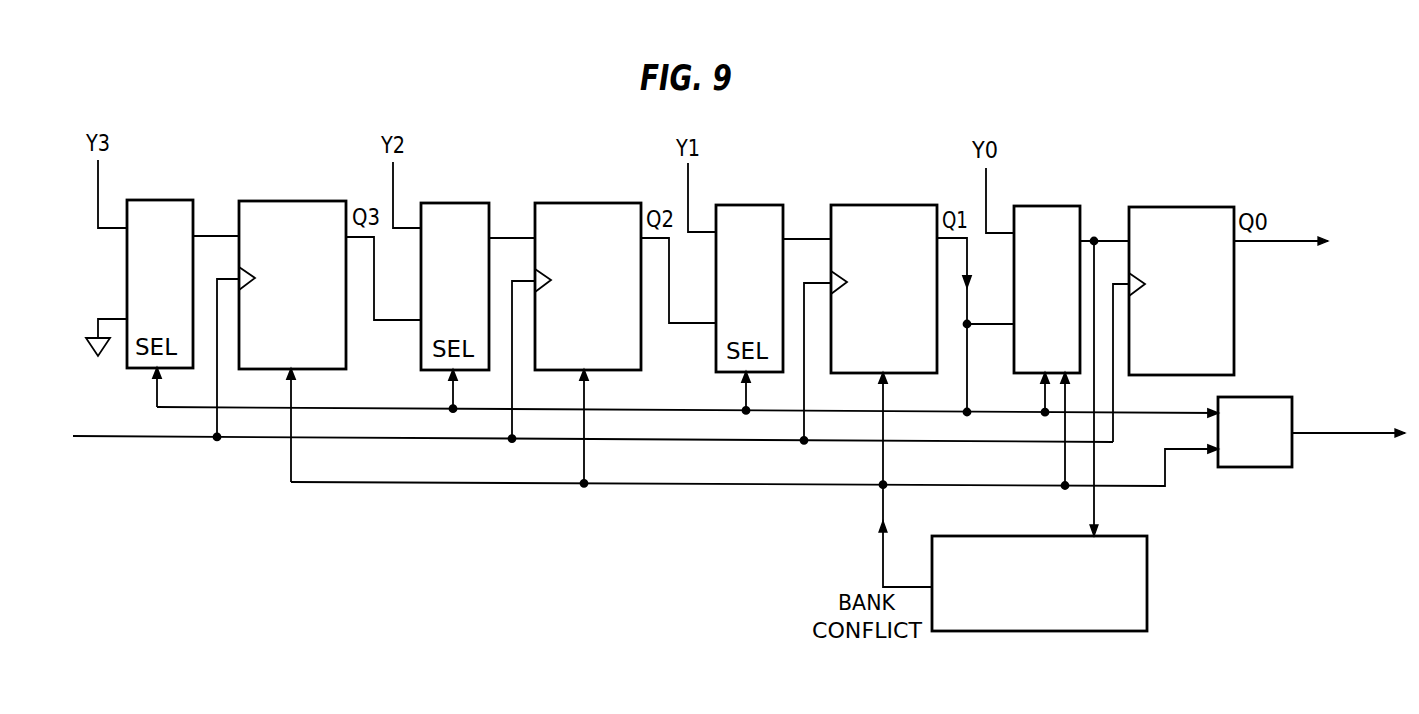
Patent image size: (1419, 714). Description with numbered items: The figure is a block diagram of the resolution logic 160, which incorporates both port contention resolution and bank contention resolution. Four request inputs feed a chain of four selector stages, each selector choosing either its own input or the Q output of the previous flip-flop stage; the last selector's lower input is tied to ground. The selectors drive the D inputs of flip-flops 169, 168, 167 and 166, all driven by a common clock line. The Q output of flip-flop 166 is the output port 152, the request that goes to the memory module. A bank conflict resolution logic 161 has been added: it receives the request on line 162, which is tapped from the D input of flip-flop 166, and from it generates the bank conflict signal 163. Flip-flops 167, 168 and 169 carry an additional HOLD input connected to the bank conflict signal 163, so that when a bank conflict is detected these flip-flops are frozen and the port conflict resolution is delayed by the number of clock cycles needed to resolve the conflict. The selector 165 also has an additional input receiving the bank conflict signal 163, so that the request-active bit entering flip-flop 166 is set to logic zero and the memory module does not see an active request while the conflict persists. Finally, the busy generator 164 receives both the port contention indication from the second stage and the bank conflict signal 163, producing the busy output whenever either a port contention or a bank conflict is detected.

The output port OUT0 152 is at (1284, 241).
The resolution logic 160 is at (74, 452).
The bank conflict resolution logic 161 is at (984, 536).
The request input line to bank conflict resolution logic 162 is at (1097, 511).
The bank conflict signal 163 is at (879, 511).
The busy generator 164 is at (1267, 396).
The selector 165 is at (1067, 267).
The flip-flop 166 is at (1201, 327).
The flip-flop 167 is at (903, 325).
The flip-flop 168 is at (607, 323).
The flip-flop 169 is at (311, 321).